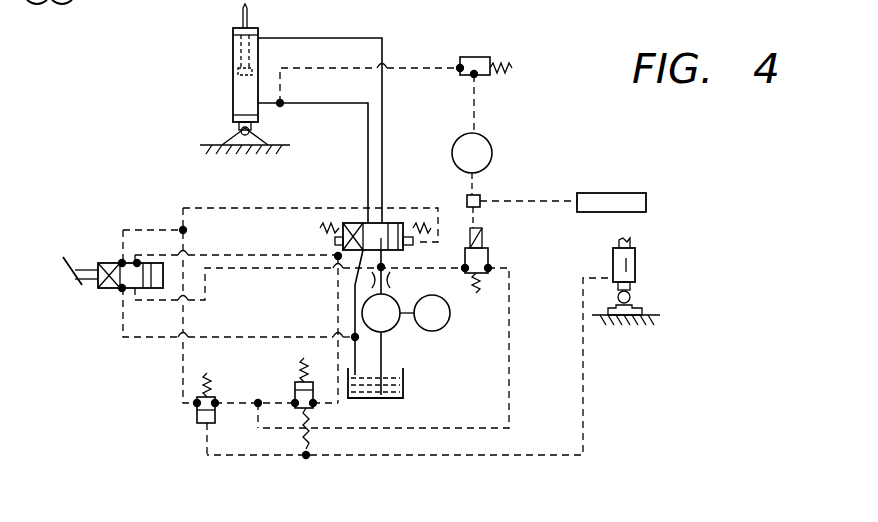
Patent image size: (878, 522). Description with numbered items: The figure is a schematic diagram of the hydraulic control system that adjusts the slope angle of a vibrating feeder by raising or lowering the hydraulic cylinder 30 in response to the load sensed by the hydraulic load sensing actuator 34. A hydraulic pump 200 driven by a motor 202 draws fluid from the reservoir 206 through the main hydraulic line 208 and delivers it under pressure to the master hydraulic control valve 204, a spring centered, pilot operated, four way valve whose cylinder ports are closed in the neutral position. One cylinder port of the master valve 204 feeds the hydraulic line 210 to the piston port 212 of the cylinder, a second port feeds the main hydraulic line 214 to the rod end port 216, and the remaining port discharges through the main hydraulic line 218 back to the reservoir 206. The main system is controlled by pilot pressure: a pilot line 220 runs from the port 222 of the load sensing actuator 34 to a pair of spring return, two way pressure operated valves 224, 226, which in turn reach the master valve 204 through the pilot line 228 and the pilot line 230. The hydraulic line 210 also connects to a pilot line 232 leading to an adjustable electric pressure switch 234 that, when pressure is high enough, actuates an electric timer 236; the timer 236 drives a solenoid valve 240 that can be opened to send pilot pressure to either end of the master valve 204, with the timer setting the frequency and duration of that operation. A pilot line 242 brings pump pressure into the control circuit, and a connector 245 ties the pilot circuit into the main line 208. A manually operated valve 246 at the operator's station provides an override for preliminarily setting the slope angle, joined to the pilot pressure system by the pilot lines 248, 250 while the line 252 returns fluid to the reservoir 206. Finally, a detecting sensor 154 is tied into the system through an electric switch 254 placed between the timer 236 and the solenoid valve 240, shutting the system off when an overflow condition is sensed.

The hydraulic cylinder 30 is at (233, 82).
The hydraulic load sensing actuator 34 is at (635, 258).
The detecting sensor 154 is at (645, 193).
The hydraulic pump 200 is at (400, 322).
The motor 202 is at (450, 320).
The master hydraulic control valve 204 is at (398, 222).
The reservoir 206 is at (404, 392).
The main hydraulic line 208 is at (384, 345).
The hydraulic line 210 is at (330, 103).
The piston port 212 is at (258, 106).
The main hydraulic line 214 is at (340, 36).
The rod end port 216 is at (260, 33).
The main hydraulic line 218 is at (354, 286).
The pilot line 220 is at (417, 455).
The port 222 is at (613, 252).
The pressure operated valve 224 is at (230, 272).
The pressure operated valve 226 is at (296, 392).
The pilot line 228 is at (302, 208).
The pilot line 230 is at (330, 333).
The pilot line 232 is at (424, 62).
The adjustable electric pressure switch 234 is at (522, 30).
The electric timer 236 is at (530, 130).
The solenoid valve 240 is at (515, 230).
The pilot line 242 is at (510, 340).
The connector 245 is at (383, 270).
The manually operated valve 246 is at (106, 290).
The pilot line 248 is at (153, 230).
The pilot line 250 is at (291, 252).
The line 252 is at (161, 338).
The electric switch 254 is at (480, 198).